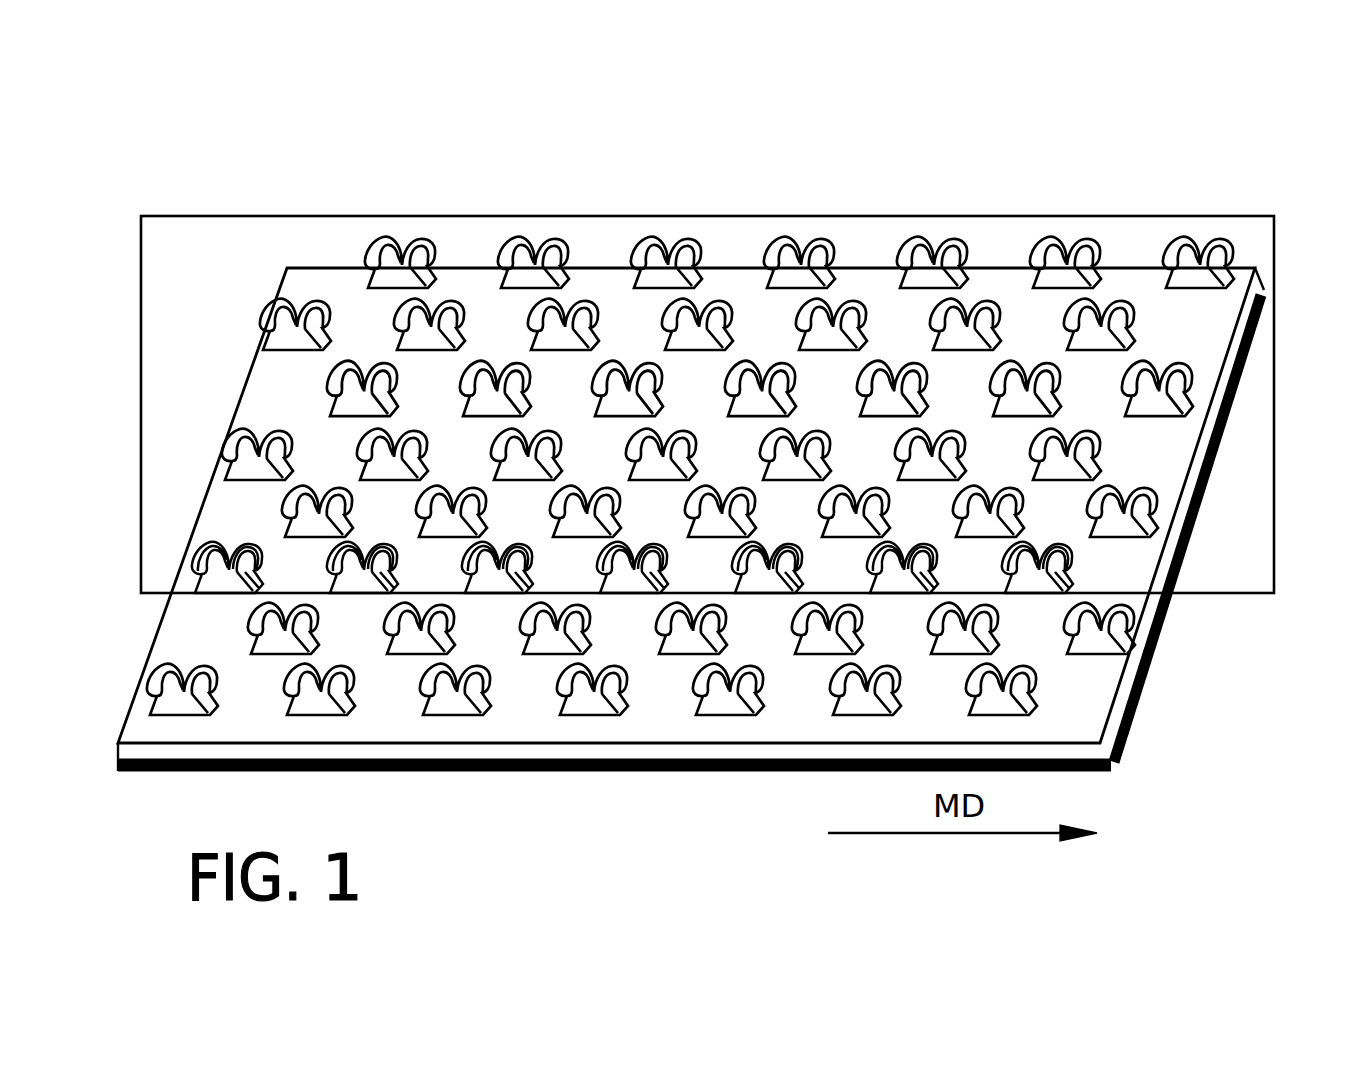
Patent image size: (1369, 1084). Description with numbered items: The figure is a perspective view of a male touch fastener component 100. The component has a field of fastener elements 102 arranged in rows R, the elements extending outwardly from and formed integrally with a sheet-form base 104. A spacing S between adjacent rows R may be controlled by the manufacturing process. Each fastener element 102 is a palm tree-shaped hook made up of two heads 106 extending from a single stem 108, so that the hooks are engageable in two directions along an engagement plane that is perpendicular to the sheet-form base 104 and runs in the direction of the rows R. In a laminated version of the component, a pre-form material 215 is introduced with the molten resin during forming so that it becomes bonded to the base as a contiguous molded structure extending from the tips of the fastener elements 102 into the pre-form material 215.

The male touch fastener component 100 is at (1200, 175).
The fastener elements 102 is at (532, 250).
The sheet-form base 104 is at (1092, 682).
The heads 106 is at (1043, 242).
The stem 108 is at (720, 700).
The pre-form material 215 is at (1115, 755).
The spacing between rows S is at (323, 428).
The rows R is at (247, 470).